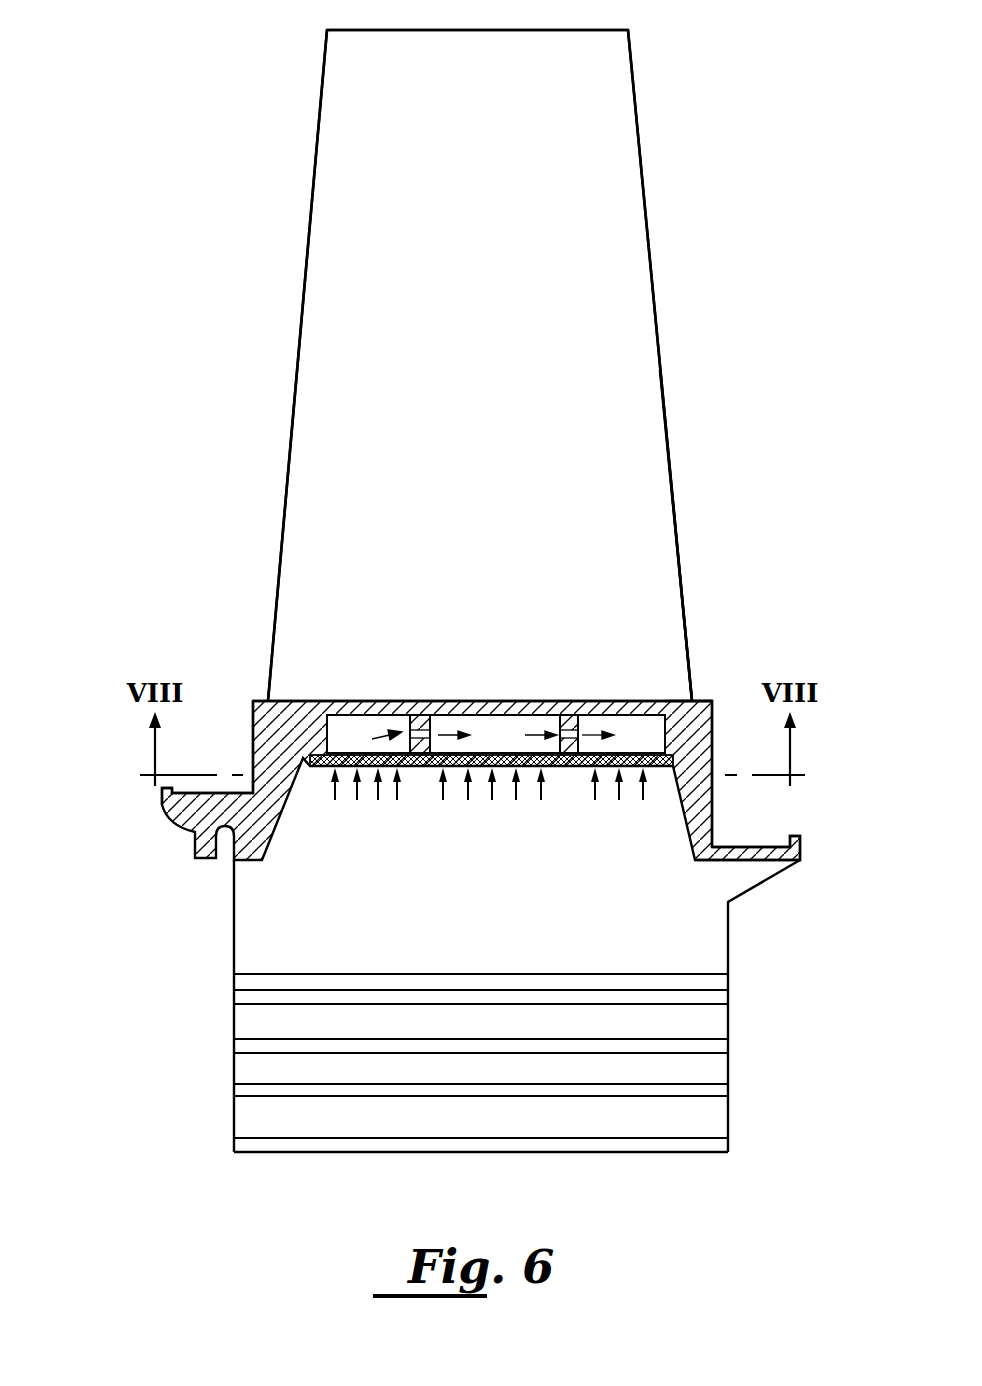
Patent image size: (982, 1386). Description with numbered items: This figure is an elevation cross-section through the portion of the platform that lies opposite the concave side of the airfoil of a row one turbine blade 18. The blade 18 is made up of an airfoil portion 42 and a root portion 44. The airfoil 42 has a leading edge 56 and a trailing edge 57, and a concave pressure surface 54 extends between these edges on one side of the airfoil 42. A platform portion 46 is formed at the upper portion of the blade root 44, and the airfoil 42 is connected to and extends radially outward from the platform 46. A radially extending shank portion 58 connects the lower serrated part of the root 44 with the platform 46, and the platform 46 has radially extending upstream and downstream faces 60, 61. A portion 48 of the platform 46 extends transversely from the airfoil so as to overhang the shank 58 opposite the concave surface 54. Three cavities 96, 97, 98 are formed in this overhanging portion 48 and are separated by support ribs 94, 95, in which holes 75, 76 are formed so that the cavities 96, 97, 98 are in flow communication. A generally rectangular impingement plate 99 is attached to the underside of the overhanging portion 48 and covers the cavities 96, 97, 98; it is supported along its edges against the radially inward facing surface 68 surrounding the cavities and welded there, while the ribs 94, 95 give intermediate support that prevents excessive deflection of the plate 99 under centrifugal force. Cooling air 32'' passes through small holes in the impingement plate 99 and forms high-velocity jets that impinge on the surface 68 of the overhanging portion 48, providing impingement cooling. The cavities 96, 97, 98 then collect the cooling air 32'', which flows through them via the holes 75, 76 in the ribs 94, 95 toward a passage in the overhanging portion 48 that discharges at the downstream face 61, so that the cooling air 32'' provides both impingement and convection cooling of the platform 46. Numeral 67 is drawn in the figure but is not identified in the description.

The turbine blade 18 is at (693, 112).
The airfoil portion 42 is at (655, 300).
The concave pressure surface 54 is at (461, 362).
The leading edge 56 is at (672, 458).
The trailing edge 57 is at (303, 300).
The platform portion 46 is at (508, 702).
The overhanging portion 48 is at (292, 706).
The downstream face 61 is at (250, 708).
The platform aft edge 67 is at (665, 701).
The upstream face 60 is at (716, 817).
The radially inward facing surface 68 is at (478, 714).
The hole 76 is at (420, 712).
The hole 75 is at (565, 706).
The cavity 98 is at (337, 752).
The cavity 97 is at (477, 752).
The cavity 96 is at (619, 752).
The impingement plate 99 is at (675, 770).
The support rib 95 is at (420, 770).
The support rib 94 is at (570, 770).
The cooling air 32'' is at (489, 827).
The shank portion 58 is at (728, 945).
The root portion 44 is at (728, 1065).